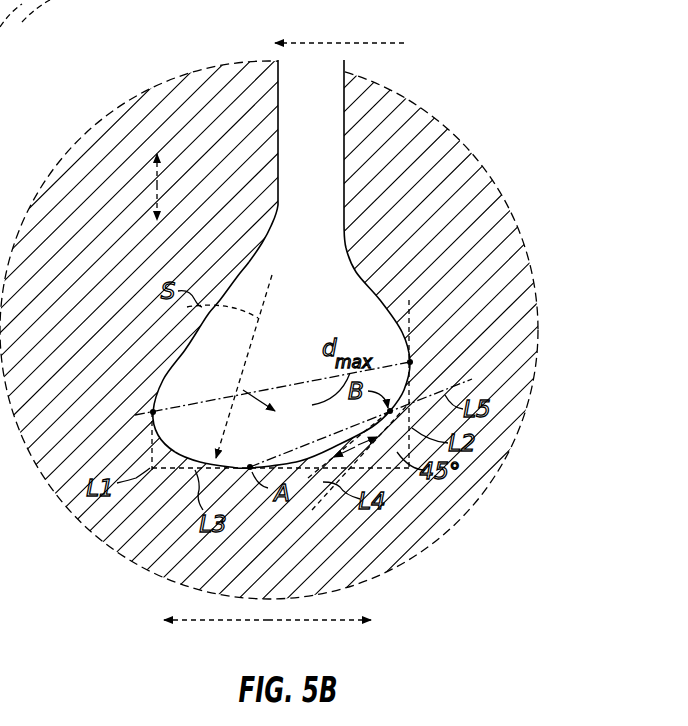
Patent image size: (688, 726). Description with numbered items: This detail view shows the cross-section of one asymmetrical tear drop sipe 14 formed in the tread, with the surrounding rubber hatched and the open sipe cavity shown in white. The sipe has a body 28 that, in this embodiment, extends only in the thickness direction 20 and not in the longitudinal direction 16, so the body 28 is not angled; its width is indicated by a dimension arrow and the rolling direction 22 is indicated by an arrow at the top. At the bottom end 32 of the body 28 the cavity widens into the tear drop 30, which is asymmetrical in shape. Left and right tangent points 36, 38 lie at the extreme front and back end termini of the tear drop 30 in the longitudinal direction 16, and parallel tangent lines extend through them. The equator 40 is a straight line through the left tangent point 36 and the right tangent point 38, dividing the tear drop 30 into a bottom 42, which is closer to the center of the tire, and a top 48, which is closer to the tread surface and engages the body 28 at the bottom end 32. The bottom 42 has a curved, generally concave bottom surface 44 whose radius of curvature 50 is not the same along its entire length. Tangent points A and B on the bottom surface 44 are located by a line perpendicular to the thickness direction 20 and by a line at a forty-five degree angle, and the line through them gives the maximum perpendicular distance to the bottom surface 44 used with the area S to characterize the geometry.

The tear drop sipe 14 is at (344, 97).
The longitudinal direction 16 is at (268, 622).
The thickness direction 20 is at (152, 190).
The rolling direction 22 is at (337, 42).
The body 28 is at (344, 133).
The tear drop 30 is at (372, 291).
The bottom end 32 is at (344, 218).
The left tangent point 36 is at (150, 409).
The right tangent point 38 is at (412, 358).
The equator 40 is at (190, 403).
The bottom 42 is at (178, 455).
The bottom surface 44 is at (170, 441).
The top 48 is at (186, 348).
The radius of curvature 50 is at (268, 291).